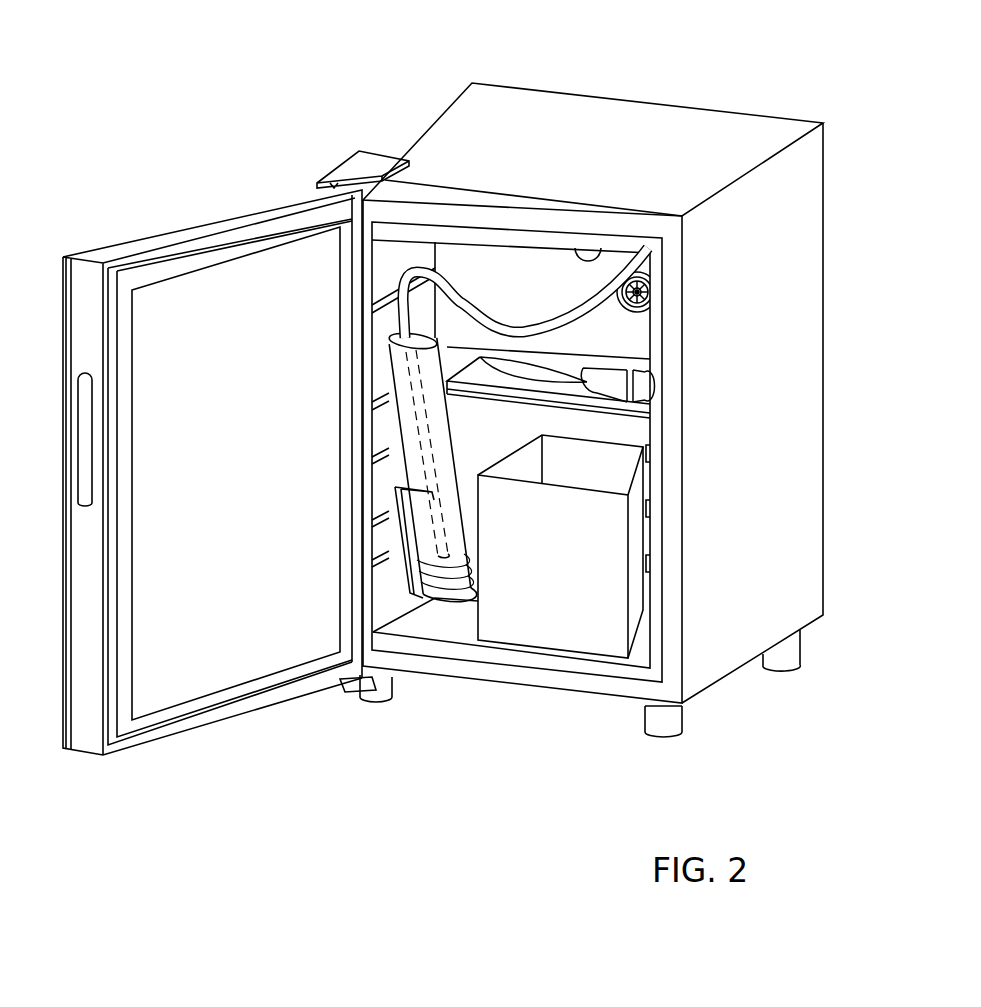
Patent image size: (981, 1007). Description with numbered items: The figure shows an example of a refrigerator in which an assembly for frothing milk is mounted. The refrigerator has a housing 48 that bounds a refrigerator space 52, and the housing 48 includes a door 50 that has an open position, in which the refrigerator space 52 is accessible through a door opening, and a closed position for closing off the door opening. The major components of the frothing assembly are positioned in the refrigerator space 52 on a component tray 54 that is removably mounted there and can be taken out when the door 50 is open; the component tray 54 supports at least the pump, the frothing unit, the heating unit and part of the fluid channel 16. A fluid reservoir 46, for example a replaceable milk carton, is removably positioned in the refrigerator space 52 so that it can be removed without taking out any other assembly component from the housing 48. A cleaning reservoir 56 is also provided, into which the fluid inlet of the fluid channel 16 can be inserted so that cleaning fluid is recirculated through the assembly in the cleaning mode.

The fluid channel 16 is at (514, 332).
The fluid reservoir 46 is at (575, 628).
The housing 48 is at (607, 123).
The door 50 is at (195, 677).
The refrigerator space 52 is at (566, 416).
The component tray 54 is at (620, 347).
The cleaning reservoir 56 is at (428, 530).